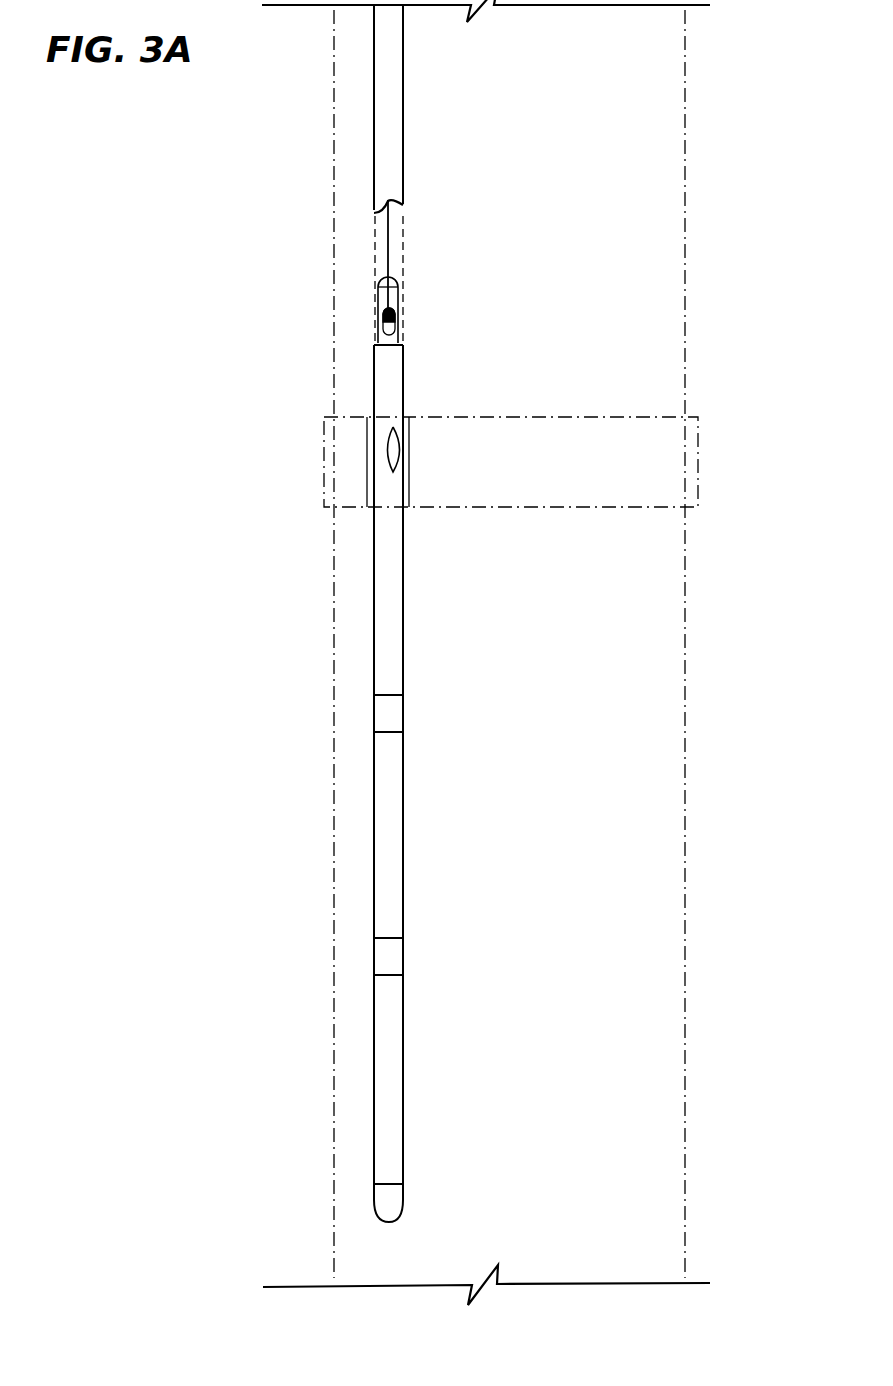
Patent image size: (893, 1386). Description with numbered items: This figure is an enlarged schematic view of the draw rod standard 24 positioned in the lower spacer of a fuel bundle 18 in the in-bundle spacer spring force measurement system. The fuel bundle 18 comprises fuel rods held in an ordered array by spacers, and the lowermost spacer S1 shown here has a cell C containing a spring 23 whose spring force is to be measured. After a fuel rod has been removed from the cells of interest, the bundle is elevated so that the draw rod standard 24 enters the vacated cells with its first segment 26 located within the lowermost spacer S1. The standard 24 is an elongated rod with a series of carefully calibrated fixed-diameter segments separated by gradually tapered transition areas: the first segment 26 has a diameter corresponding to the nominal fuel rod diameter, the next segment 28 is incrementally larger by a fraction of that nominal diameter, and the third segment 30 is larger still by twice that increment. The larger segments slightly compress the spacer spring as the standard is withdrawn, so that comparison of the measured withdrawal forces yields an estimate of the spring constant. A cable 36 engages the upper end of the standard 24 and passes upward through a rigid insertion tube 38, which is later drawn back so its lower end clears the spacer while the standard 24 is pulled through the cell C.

The fuel bundle 18 is at (687, 770).
The insertion tube 38 is at (388, 158).
The cable 36 is at (392, 245).
The spring 23 is at (403, 470).
The lowermost spacer S1 is at (577, 417).
The cell C is at (375, 452).
The first segment 26 is at (383, 613).
The draw rod standard 24 is at (405, 677).
The second segment 28 is at (405, 895).
The third segment 30 is at (405, 1110).